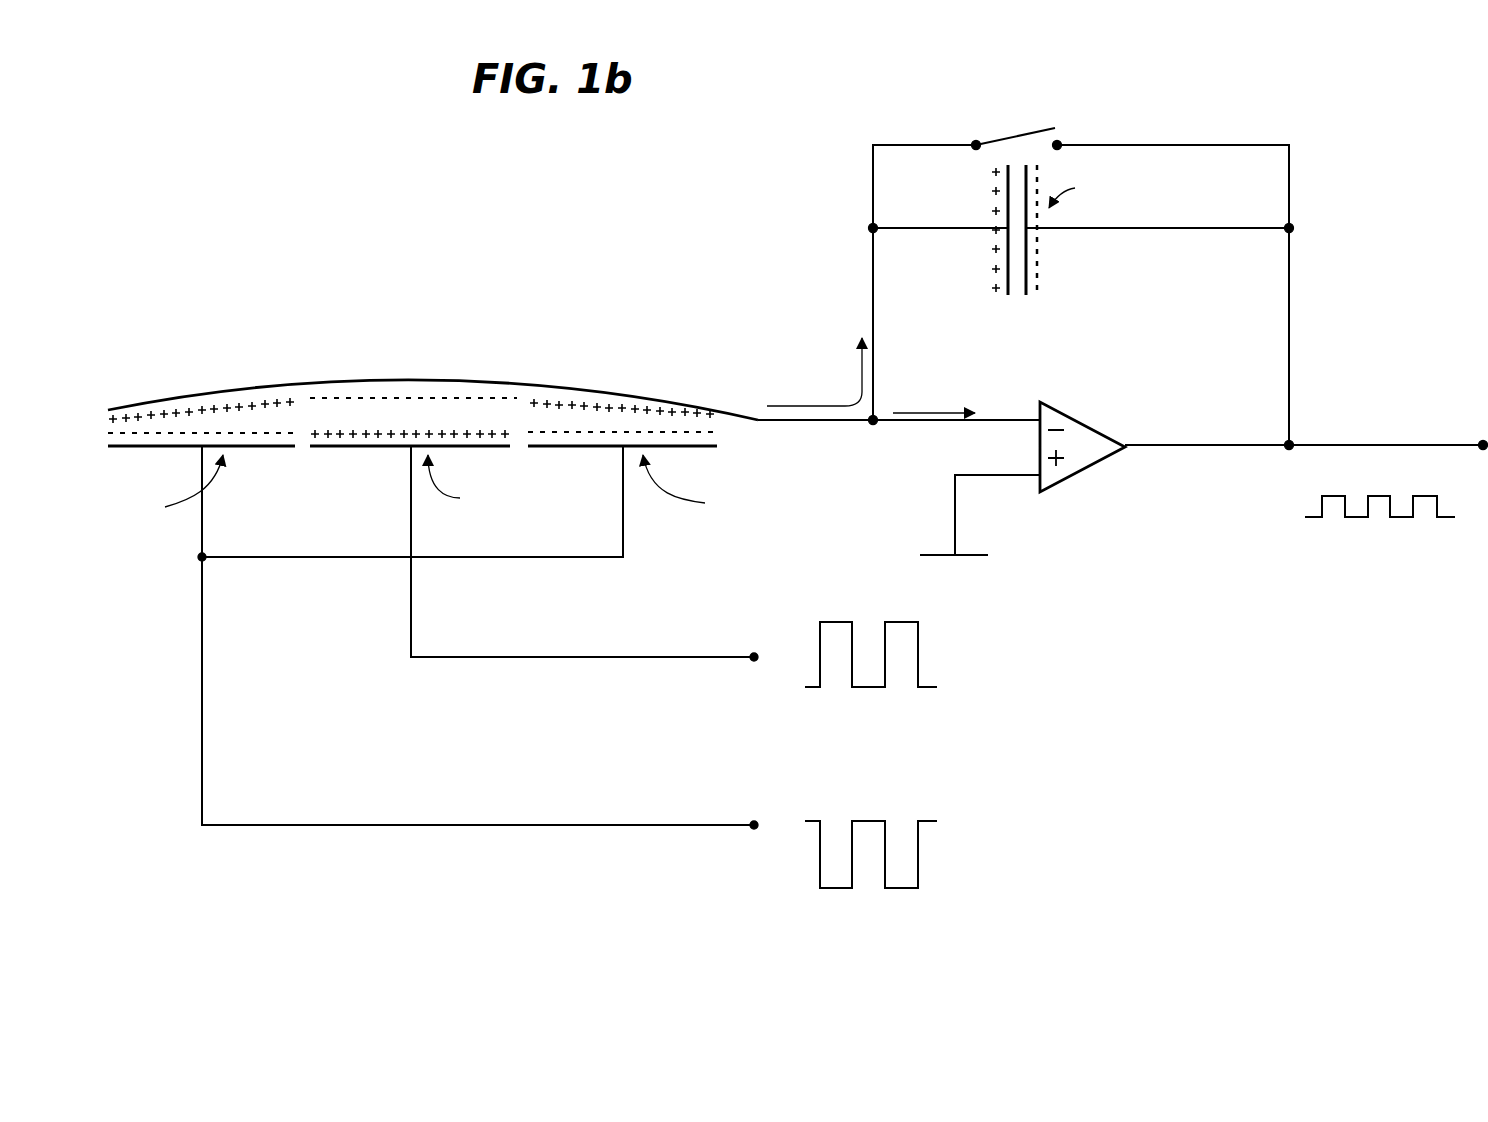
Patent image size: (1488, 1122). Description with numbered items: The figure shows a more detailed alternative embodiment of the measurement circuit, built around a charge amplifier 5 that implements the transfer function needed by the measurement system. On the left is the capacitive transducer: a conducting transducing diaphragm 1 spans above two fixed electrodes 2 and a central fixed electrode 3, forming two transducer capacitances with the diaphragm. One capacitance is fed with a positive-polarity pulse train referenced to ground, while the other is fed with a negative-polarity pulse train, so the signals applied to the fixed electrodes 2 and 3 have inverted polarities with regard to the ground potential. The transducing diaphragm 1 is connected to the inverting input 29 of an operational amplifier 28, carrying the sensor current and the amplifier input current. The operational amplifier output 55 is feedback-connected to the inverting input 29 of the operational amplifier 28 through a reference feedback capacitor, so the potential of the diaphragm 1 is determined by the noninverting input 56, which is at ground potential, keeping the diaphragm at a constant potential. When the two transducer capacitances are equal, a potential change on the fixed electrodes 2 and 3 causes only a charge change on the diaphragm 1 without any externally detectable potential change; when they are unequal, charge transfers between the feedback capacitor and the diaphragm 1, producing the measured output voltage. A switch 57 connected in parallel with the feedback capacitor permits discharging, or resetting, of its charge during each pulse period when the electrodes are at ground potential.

The conducting transducing diaphragm 1 is at (444, 378).
The fixed electrode 2 is at (167, 450).
The fixed electrode 3 is at (392, 448).
The charge amplifier 5 is at (1365, 254).
The operational amplifier 28 is at (1054, 600).
The inverting input 29 is at (1028, 417).
The operational amplifier output 55 is at (1105, 452).
The noninverting input 56 is at (1034, 473).
The switch 57 is at (1083, 129).